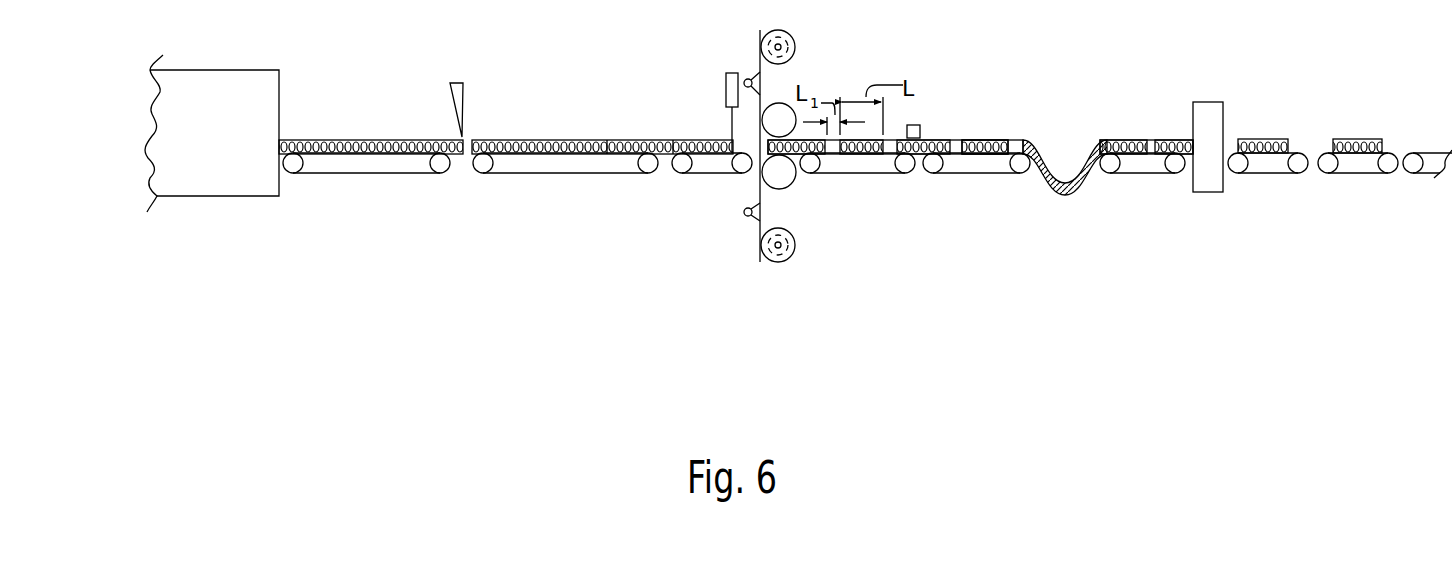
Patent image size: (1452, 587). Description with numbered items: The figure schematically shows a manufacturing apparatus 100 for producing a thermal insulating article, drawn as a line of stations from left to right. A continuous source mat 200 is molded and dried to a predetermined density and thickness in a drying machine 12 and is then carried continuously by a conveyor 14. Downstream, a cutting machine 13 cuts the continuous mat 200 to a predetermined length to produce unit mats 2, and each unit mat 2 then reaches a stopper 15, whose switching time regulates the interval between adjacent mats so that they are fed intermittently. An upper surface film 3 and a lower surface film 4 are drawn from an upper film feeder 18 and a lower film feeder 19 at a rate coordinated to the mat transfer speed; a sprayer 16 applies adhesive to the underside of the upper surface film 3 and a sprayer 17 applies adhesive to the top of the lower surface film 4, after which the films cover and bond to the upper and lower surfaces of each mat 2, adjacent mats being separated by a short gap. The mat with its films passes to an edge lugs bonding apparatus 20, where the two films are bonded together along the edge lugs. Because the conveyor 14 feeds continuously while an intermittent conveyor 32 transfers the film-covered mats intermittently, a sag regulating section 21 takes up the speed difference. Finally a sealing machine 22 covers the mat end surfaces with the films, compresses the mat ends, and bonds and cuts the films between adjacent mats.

The drying machine 12 is at (232, 193).
The continuous source mat 200 is at (387, 148).
The cutting machine 13 is at (460, 82).
The conveyor 14 is at (390, 175).
The unit mat 2 is at (495, 140).
The stopper 15 is at (727, 74).
The sprayer for the upper surface film 16 is at (748, 79).
The sprayer for the lower surface film 17 is at (746, 216).
The upper film feeder 18 is at (793, 38).
The lower film feeder 19 is at (795, 258).
The upper surface film 3 is at (764, 84).
The lower surface film 4 is at (763, 203).
The edge lugs bonding apparatus 20 is at (917, 125).
The manufacturing apparatus 100 is at (982, 128).
The sag regulating section 21 is at (1065, 195).
The intermittent conveyor 32 is at (1145, 173).
The sealing machine 22 is at (1210, 192).